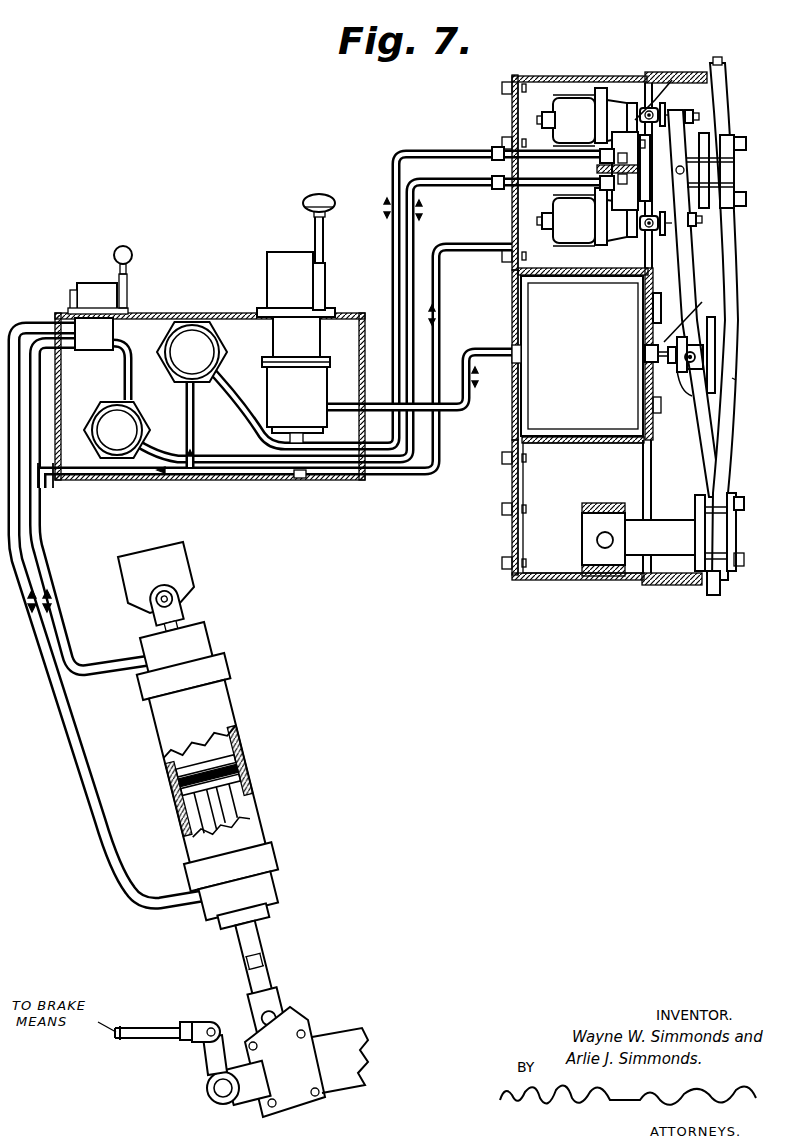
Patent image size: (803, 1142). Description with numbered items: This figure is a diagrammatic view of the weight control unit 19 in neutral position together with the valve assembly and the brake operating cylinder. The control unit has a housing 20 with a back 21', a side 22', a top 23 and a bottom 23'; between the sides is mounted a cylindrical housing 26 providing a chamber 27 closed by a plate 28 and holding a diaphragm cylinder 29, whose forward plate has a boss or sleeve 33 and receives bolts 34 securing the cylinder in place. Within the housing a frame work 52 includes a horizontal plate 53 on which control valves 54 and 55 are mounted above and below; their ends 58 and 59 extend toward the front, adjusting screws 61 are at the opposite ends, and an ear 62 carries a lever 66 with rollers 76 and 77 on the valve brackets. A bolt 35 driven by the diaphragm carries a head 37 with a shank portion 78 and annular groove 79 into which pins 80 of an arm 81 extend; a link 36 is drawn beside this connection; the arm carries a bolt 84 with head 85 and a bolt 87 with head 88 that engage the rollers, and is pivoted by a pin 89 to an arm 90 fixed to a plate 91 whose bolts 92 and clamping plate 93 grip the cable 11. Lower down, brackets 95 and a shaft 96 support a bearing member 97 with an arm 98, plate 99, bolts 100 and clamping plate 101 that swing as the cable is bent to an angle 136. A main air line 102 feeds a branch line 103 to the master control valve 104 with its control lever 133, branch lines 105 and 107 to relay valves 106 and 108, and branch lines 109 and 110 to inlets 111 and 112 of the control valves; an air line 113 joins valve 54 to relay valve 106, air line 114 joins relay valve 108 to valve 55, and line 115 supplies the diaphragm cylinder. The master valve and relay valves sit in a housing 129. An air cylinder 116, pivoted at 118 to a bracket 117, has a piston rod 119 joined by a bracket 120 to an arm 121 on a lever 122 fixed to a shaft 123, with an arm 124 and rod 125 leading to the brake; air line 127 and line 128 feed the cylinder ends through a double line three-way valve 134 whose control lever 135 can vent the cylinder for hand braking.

The cable 11 is at (729, 408).
The weight control unit 19 is at (512, 80).
The housing 20 is at (616, 77).
The back 21' is at (498, 355).
The side 22' is at (556, 507).
The top 23 is at (579, 63).
The bottom 23' is at (607, 589).
The cylindrical housing 26 is at (560, 272).
The chamber 27 is at (520, 318).
The plate 28 is at (652, 273).
The diaphragm cylinder 29 is at (633, 406).
The boss or sleeve 33 is at (647, 361).
The bolts 34 is at (657, 308).
The bolt 35 is at (673, 364).
The link 36 is at (690, 315).
The head 37 is at (714, 333).
The frame work 52 is at (640, 178).
The horizontal plate 53 is at (597, 169).
The control valve 54 is at (572, 103).
The control valve 55 is at (566, 230).
The end 58 is at (651, 108).
The end 59 is at (630, 238).
The adjusting screws 61 is at (541, 120).
The ear 62 is at (648, 152).
The lever 66 is at (647, 142).
The roller 76 is at (717, 66).
The roller 77 is at (651, 219).
The shank portion 78 is at (704, 363).
The annular groove 79 is at (690, 388).
The pins 80 is at (696, 357).
The arm 81 is at (690, 271).
The bolt 84 is at (693, 117).
The head 85 is at (665, 114).
The bolt 87 is at (700, 222).
The head 88 is at (668, 237).
The pin 89 is at (735, 171).
The arm 90 is at (745, 160).
The plate 91 is at (706, 141).
The bolts 92 is at (746, 201).
The clamping or retaining plate 93 is at (737, 191).
The brackets 95 is at (586, 521).
The shaft 96 is at (603, 544).
The bearing member 97 is at (628, 541).
The arm 98 is at (661, 520).
The plate 99 is at (697, 516).
The bolts 100 is at (745, 505).
The clamping or retaining plate 101 is at (736, 556).
The main air line 102 is at (93, 478).
The branch line 103 is at (300, 478).
The master control valve 104 is at (282, 288).
The branch line 105 is at (188, 400).
The graduated pressure regulating relay valve 106 is at (193, 342).
The branch line 107 is at (122, 478).
The graduated pressure regulating relay valve 108 is at (108, 418).
The branch line 109 is at (492, 155).
The branch line 110 is at (492, 185).
The inlet 111 is at (612, 151).
The inlet 112 is at (612, 193).
The air line 113 is at (394, 172).
The air line 114 is at (412, 186).
The line 115 is at (462, 406).
The air cylinder 116 is at (246, 805).
The bracket 117 is at (130, 570).
The pivotal connection 118 is at (172, 598).
The piston rod 119 is at (256, 950).
The bracket 120 is at (280, 1015).
The arm 121 is at (310, 1052).
The lever 122 is at (352, 1063).
The shaft 123 is at (222, 1100).
The arm 124 is at (214, 1060).
The rod 125 is at (164, 1030).
The air line 127 is at (14, 338).
The line 128 is at (41, 519).
The housing 129 is at (357, 482).
The control lever 133 is at (324, 237).
The double line three-way valve 134 is at (85, 292).
The control lever 135 is at (129, 251).
The angle 136 is at (733, 380).